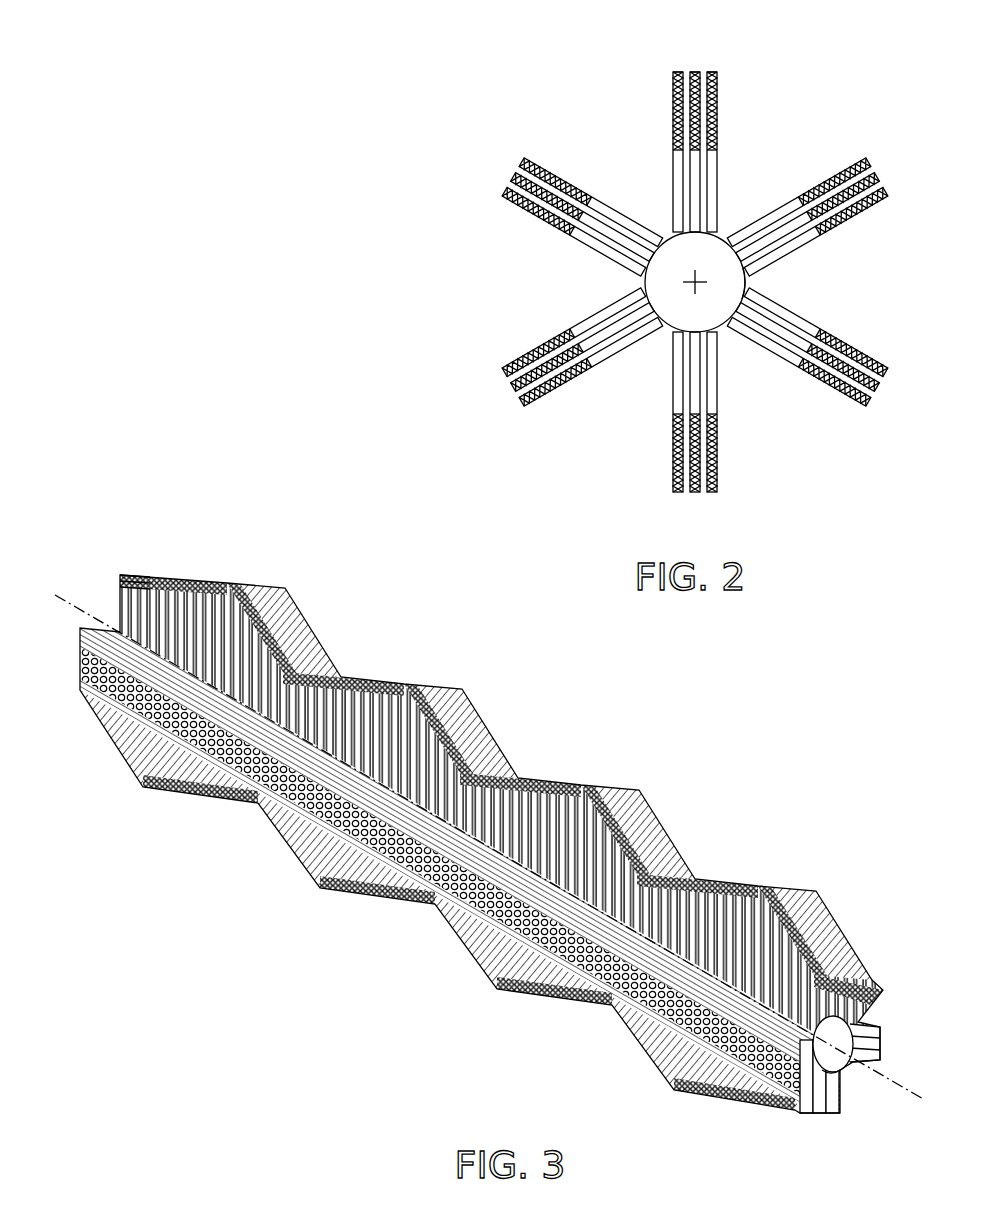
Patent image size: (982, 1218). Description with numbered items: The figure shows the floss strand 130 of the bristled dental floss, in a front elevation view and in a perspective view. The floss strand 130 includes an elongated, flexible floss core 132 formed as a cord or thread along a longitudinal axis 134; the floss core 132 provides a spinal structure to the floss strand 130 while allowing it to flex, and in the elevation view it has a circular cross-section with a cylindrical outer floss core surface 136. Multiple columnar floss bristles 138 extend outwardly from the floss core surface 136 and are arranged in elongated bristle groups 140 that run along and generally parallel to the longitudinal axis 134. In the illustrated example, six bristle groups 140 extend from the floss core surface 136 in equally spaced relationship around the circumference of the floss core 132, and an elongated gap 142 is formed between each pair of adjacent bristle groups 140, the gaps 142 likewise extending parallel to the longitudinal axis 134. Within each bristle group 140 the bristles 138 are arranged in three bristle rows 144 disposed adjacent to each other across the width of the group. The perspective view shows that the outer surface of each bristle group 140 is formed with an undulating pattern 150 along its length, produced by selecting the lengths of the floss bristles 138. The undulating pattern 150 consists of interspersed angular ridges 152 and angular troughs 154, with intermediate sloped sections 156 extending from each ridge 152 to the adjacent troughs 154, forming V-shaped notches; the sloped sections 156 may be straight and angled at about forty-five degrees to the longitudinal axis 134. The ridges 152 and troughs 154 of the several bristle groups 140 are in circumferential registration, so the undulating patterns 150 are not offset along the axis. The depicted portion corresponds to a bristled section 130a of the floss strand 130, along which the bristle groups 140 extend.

In FIG. 2, the floss strand 130 is at (665, 253).
In FIG. 3, the floss strand 130 is at (488, 832).
In FIG. 2, the bristled section 130a is at (665, 253).
In FIG. 3, the bristled section 130a is at (488, 832).
In FIG. 2, the floss core 132 is at (665, 278).
In FIG. 3, the floss core 132 is at (840, 1037).
In FIG. 2, the longitudinal axis 134 is at (695, 282).
In FIG. 3, the longitudinal axis 134 is at (903, 1085).
In FIG. 2, the floss core surface 136 is at (746, 282).
In FIG. 3, the floss core surface 136 is at (848, 1065).
In FIG. 2, the floss bristles 138 is at (693, 127).
In FIG. 3, the floss bristles 138 is at (822, 997).
In FIG. 2, the bristle group 140 is at (556, 164).
In FIG. 3, the bristle group 140 is at (304, 610).
In FIG. 2, the elongated gap 142 is at (842, 262).
In FIG. 3, the elongated gap 142 is at (225, 648).
In FIG. 2, the bristle rows 144 is at (678, 72).
In FIG. 3, the bristle rows 144 is at (126, 576).
In FIG. 2, the undulating pattern 150 is at (545, 188).
In FIG. 3, the undulating pattern 150 is at (479, 848).
In FIG. 2, the undulating pattern ridges 152 is at (497, 183).
In FIG. 3, the undulating pattern ridges 152 is at (395, 682).
In FIG. 2, the undulating pattern troughs 154 is at (579, 239).
In FIG. 3, the undulating pattern troughs 154 is at (338, 660).
In FIG. 2, the undulating pattern sloped sections 156 is at (574, 187).
In FIG. 3, the undulating pattern sloped sections 156 is at (260, 598).